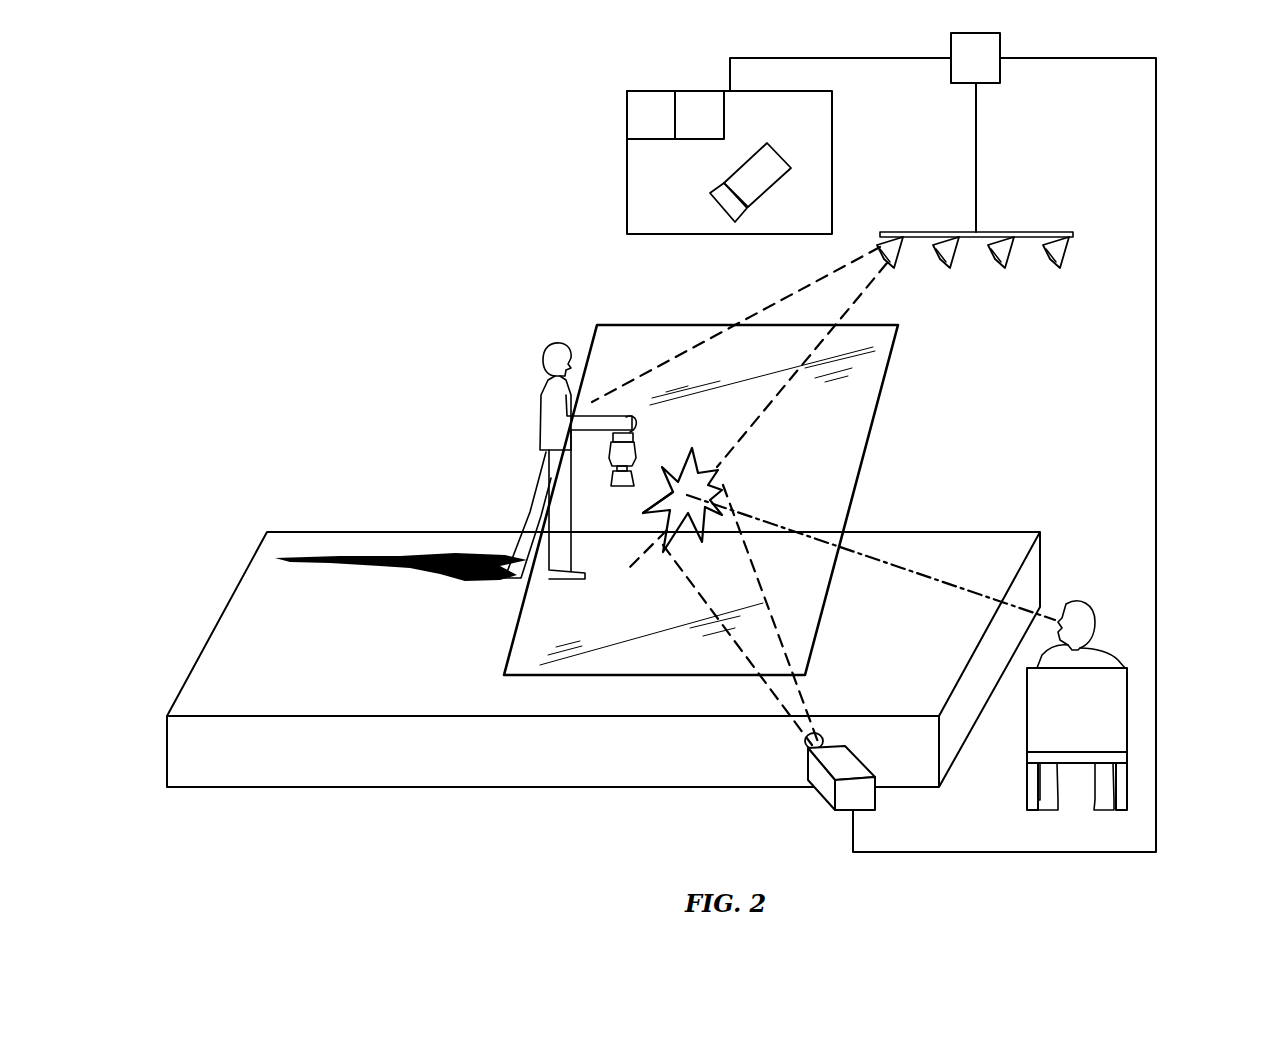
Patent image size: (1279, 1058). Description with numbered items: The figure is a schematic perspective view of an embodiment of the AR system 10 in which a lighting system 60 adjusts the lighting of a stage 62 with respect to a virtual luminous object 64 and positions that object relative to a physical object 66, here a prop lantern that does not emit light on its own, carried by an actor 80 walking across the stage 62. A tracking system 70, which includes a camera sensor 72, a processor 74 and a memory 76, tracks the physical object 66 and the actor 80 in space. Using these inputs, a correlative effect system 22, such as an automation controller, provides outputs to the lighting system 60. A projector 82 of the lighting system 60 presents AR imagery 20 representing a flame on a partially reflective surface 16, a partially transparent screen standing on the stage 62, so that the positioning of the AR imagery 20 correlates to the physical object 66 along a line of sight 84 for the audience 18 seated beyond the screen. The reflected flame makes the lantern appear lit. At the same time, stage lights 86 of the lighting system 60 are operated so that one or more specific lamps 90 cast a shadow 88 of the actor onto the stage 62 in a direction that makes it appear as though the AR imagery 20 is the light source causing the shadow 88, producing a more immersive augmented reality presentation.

The AR system 10 is at (1208, 284).
The partially reflective surface 16 is at (858, 475).
The audience 18 is at (1091, 609).
The AR imagery 20 is at (665, 513).
The correlative effect system 22 is at (975, 58).
The lighting system 60 is at (1012, 192).
The stage 62 is at (421, 336).
The virtual luminous object 64 is at (690, 450).
The physical object 66 is at (634, 452).
The tracking system 70 is at (627, 158).
The sensor 72 is at (750, 182).
The processor 74 is at (651, 115).
The memory 76 is at (699, 115).
The actor 80 is at (549, 344).
The projector 82 is at (863, 764).
The line of sight 84 is at (915, 570).
The stage lights 86 is at (1030, 232).
The shadow 88 is at (303, 556).
The lamps 90 is at (895, 268).